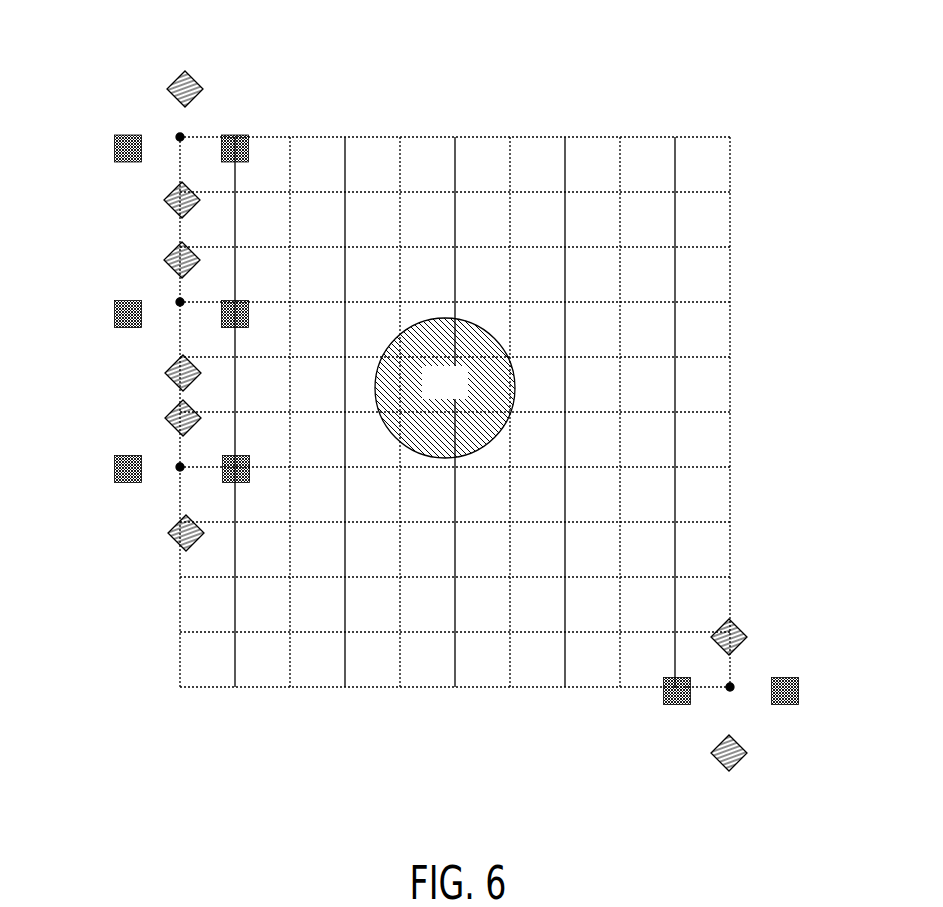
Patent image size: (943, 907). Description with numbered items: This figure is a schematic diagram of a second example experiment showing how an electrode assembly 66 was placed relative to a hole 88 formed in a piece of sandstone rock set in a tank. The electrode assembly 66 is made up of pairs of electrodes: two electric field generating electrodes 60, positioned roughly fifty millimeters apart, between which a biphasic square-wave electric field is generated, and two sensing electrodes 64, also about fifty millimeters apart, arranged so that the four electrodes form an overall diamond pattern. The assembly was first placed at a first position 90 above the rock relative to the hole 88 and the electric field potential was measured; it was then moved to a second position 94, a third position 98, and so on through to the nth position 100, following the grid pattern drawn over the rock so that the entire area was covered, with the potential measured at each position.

The electric field generating electrodes 60 is at (242, 133).
The sensing electrodes 64 is at (193, 78).
The electrode assembly 66 is at (137, 98).
The hole 88 is at (433, 396).
The first position 90 is at (180, 137).
The second position 94 is at (180, 302).
The third position 98 is at (180, 467).
The nth position 100 is at (730, 687).